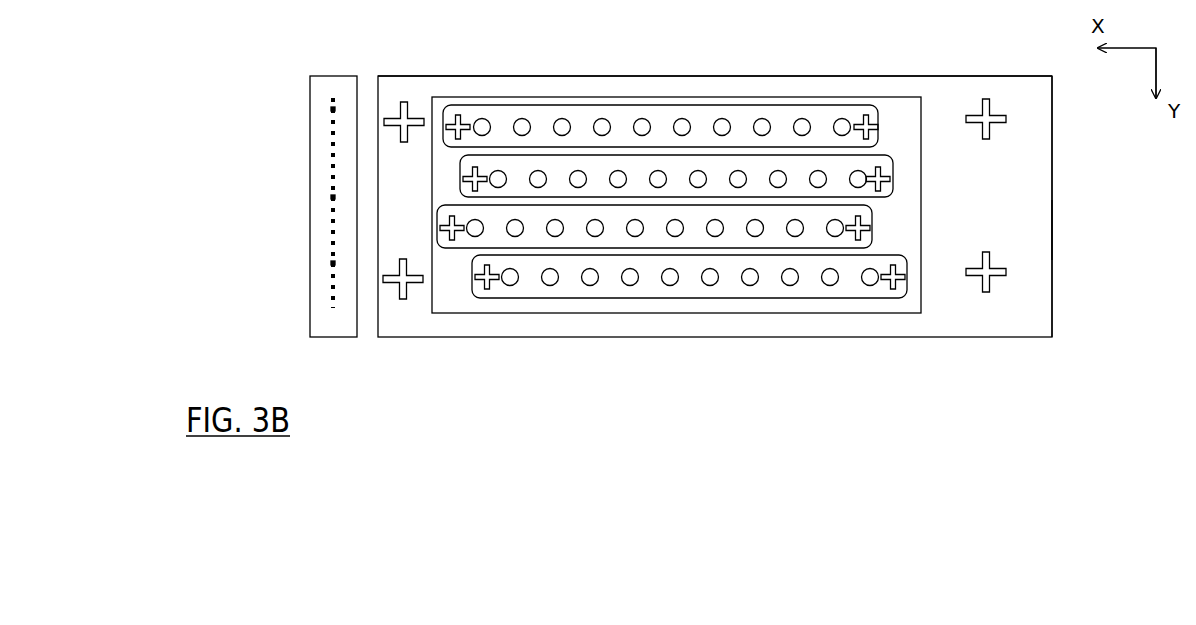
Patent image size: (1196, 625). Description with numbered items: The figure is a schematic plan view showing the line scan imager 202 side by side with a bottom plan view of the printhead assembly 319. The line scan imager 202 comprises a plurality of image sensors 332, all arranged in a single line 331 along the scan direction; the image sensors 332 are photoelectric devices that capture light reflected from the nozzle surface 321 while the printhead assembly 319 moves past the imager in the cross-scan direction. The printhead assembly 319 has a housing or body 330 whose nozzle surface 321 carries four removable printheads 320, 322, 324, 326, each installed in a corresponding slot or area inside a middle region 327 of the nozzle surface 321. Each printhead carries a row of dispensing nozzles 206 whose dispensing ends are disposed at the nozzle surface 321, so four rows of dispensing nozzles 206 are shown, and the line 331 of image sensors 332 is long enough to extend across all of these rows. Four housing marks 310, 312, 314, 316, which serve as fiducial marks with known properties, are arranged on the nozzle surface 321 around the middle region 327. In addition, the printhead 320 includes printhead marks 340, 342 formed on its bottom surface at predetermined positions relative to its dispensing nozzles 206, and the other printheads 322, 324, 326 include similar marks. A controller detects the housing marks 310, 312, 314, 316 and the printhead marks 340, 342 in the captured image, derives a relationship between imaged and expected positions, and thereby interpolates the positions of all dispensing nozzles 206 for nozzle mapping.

The line scan imager 202 is at (316, 287).
The dispensing nozzles 206 is at (790, 100).
The housing mark 310 is at (400, 100).
The housing mark 312 is at (986, 100).
The housing mark 314 is at (986, 290).
The housing mark 316 is at (403, 297).
The printhead assembly 319 is at (608, 76).
The printhead 320 is at (662, 78).
The nozzle surface 321 is at (1030, 252).
The printhead 322 is at (893, 168).
The printhead 324 is at (872, 222).
The printhead 326 is at (886, 298).
The middle region 327 is at (630, 313).
The housing or body 330 is at (1052, 308).
The line 331 is at (333, 86).
The image sensors 332 is at (338, 265).
The printhead mark 340 is at (458, 113).
The printhead mark 342 is at (875, 113).